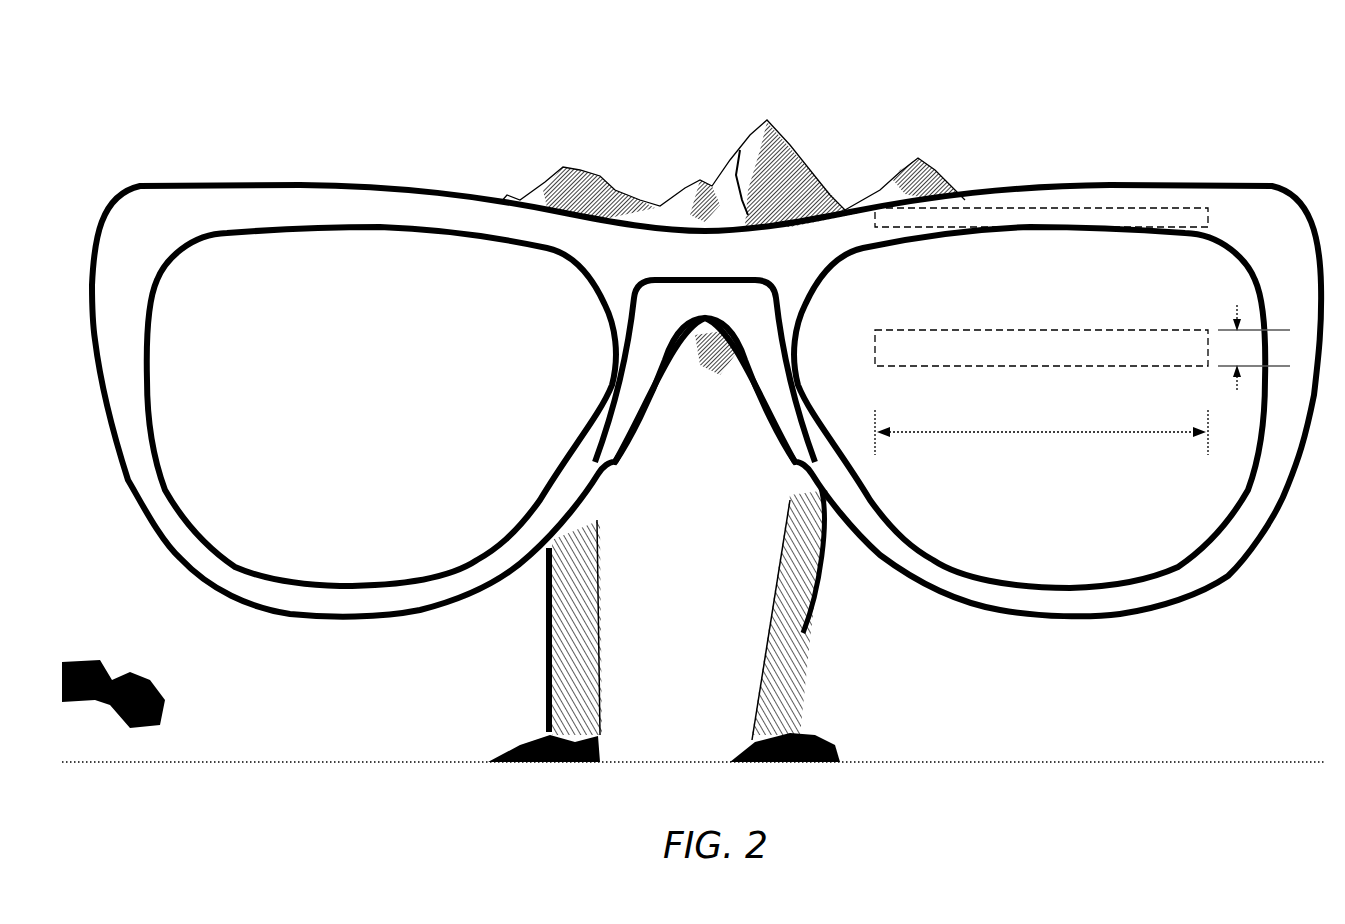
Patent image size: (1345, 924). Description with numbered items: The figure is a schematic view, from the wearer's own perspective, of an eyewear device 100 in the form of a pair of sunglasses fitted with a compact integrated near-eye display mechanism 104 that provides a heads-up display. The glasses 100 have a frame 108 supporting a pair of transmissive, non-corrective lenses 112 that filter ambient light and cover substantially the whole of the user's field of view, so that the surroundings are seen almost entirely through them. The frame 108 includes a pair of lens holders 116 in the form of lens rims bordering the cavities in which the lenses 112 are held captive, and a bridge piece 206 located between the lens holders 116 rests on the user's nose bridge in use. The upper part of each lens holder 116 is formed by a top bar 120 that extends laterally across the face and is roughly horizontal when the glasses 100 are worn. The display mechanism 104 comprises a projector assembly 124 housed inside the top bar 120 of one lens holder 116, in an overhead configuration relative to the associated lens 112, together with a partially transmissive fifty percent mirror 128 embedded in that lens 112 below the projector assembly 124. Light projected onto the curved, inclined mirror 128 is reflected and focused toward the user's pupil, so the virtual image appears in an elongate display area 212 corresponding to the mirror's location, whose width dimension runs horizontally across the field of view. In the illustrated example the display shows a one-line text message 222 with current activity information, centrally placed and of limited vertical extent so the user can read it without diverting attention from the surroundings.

The eyewear device 100 is at (1002, 641).
The near-eye display mechanism 104 is at (853, 237).
The frame 108 is at (597, 242).
The lenses 112 is at (370, 421).
The lens holders 116 is at (253, 593).
The top bar 120 is at (323, 197).
The projector assembly 124 is at (1113, 220).
The 50% mirror 128 is at (1104, 368).
The bridge piece 206 is at (643, 386).
The display area 212 is at (1113, 331).
The text message 222 is at (897, 349).